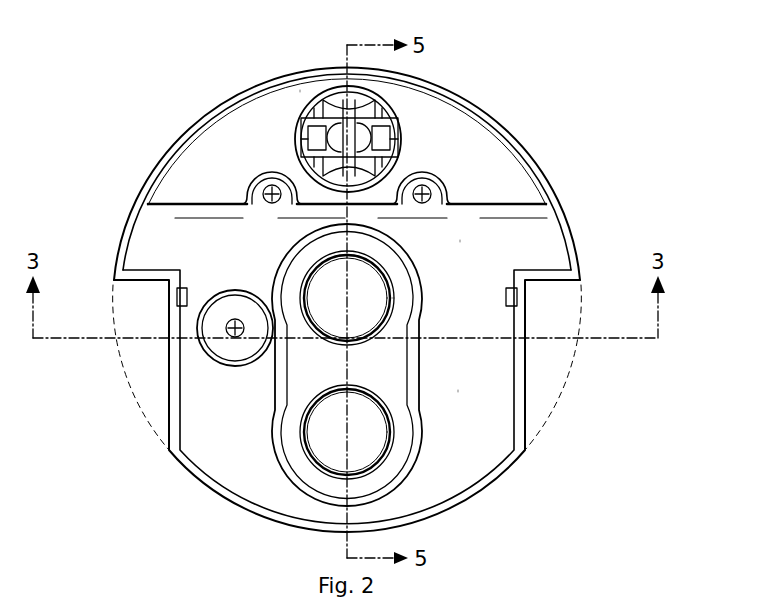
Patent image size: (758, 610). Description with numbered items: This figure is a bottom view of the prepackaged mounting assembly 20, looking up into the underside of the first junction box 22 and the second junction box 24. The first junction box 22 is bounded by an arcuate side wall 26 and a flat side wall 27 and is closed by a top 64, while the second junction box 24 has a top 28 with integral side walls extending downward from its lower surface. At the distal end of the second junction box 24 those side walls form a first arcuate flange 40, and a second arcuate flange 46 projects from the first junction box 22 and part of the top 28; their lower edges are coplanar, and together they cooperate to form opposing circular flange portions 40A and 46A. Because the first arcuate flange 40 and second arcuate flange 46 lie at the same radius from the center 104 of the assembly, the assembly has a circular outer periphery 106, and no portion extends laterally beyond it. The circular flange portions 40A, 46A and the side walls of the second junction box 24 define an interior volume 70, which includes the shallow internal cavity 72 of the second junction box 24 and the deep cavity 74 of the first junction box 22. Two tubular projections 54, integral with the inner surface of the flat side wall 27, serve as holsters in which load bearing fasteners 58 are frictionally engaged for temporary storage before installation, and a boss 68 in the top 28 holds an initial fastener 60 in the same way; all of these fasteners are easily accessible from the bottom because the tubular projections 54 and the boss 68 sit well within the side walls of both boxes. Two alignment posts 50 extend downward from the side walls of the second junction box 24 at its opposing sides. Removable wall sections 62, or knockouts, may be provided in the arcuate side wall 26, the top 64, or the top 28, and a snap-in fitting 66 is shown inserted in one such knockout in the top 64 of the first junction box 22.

The prepackaged mounting assembly 20 is at (574, 95).
The first junction box 22 is at (188, 125).
The second junction box 24 is at (495, 482).
The arcuate side wall 26 is at (452, 95).
The flat side wall 27 is at (518, 205).
The top 28 is at (442, 262).
The first arcuate flange 40 is at (460, 497).
The circular flange portion 40A is at (267, 512).
The second arcuate flange 46 is at (153, 158).
The circular flange portion 46A is at (150, 205).
The alignment posts 50 is at (177, 297).
The tubular projections 54 is at (258, 172).
The load bearing fastener 58 is at (247, 196).
The initial fastener 60 is at (237, 337).
The removable wall sections 62 is at (316, 308).
The top 64 is at (451, 164).
The fitting 66 is at (300, 107).
The boss 68 is at (243, 292).
The interior volume 70 is at (485, 262).
The shallow internal cavity 72 is at (460, 387).
The deep cavity 74 is at (460, 135).
The center 104 is at (340, 300).
The circular outer periphery 106 is at (125, 372).